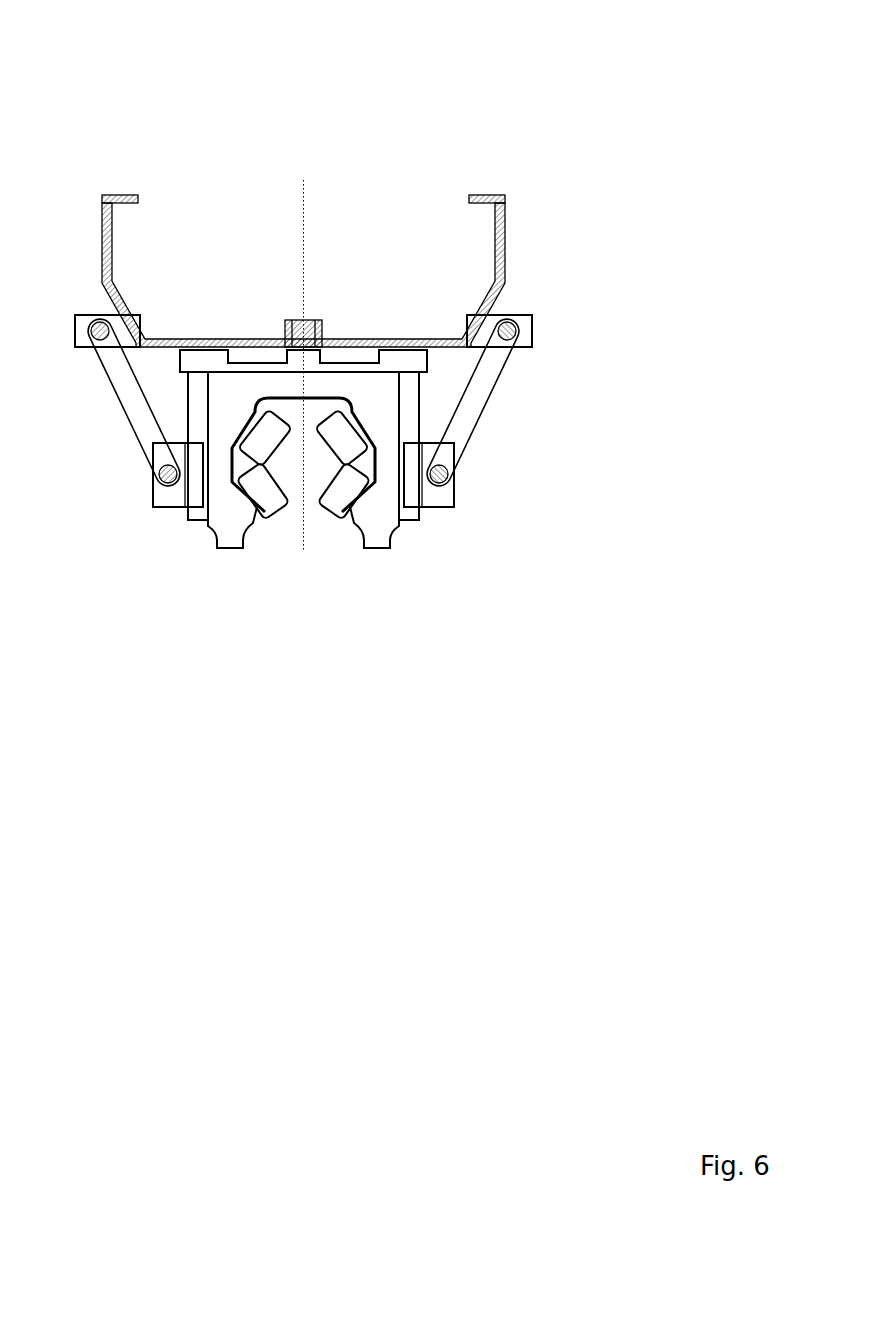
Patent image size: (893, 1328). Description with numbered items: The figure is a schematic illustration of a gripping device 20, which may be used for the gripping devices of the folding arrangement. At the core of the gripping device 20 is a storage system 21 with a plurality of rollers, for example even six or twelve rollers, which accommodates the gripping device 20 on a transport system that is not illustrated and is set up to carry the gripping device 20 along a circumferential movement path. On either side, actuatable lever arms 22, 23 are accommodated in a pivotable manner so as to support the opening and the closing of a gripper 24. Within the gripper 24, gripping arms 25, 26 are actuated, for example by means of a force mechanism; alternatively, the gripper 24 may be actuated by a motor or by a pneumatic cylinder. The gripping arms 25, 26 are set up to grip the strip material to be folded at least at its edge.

The gripping device 20 is at (398, 100).
The storage system 21 is at (348, 490).
The lever arm 22 is at (470, 408).
The lever arm 23 is at (133, 400).
The gripper 24 is at (508, 207).
The gripping arm 25 is at (121, 195).
The gripping arm 26 is at (490, 195).